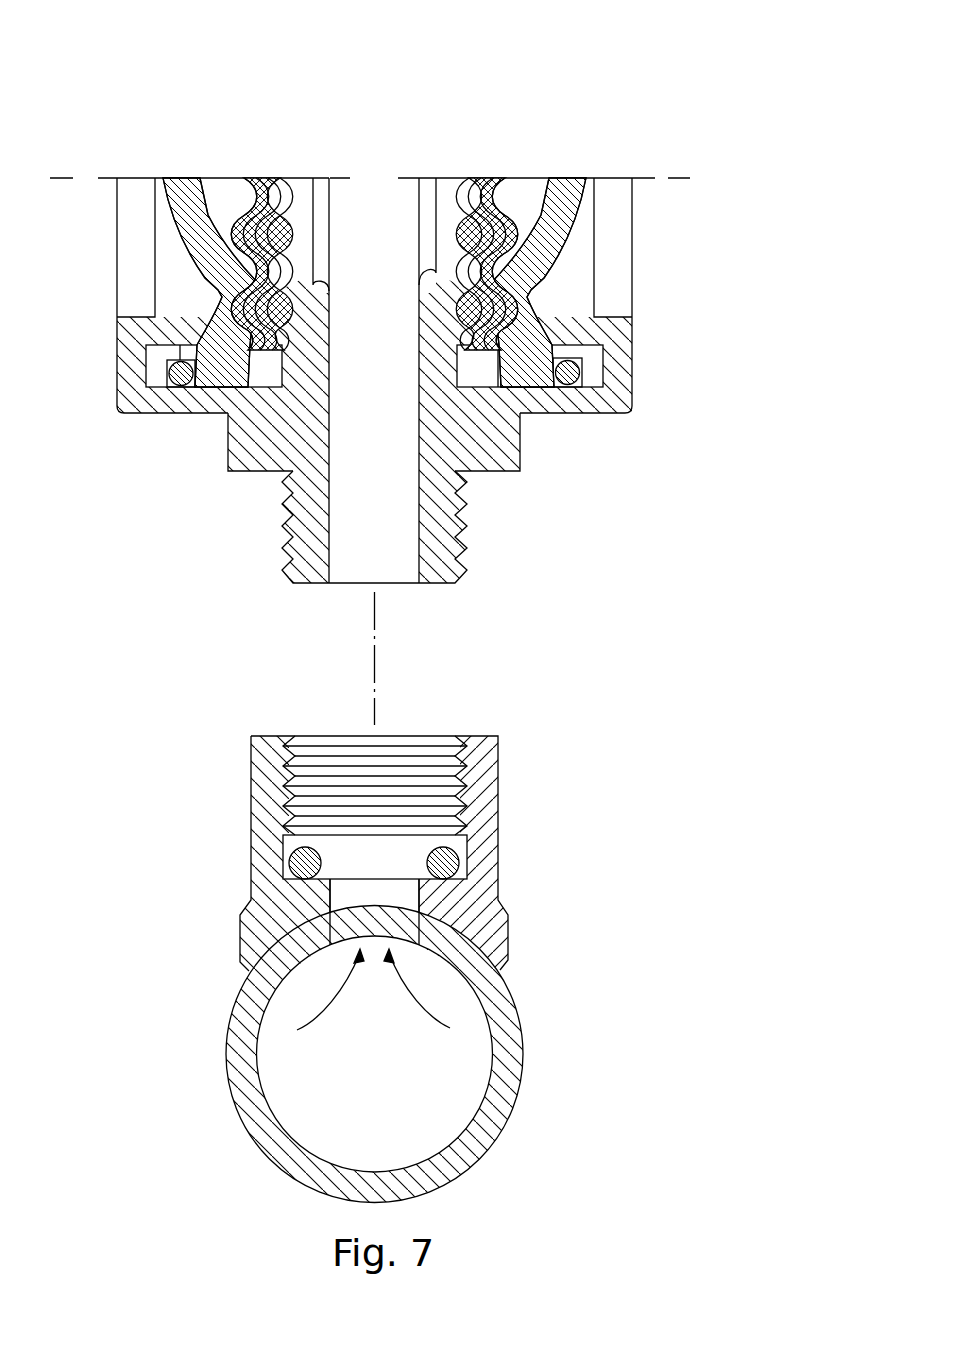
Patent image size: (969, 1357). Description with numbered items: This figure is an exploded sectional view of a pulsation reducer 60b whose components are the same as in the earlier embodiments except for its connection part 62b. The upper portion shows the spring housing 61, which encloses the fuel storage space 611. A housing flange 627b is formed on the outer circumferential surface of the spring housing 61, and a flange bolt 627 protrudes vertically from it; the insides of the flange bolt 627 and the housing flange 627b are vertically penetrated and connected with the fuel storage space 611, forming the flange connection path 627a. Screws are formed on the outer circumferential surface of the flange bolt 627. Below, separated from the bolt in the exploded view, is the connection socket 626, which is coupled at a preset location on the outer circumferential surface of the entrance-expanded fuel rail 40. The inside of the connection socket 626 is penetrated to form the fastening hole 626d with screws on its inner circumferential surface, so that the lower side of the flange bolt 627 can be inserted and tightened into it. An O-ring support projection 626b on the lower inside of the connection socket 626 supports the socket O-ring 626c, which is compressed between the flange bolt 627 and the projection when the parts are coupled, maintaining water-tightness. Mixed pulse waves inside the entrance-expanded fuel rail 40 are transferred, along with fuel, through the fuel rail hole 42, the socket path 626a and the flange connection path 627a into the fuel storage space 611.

The pulsation reducer 60b is at (504, 138).
The fuel storage space 611 is at (384, 194).
The spring housing 61 is at (617, 366).
The housing flange 627b is at (513, 438).
The flange connection path 627a is at (353, 512).
The flange bolt 627 is at (462, 507).
The fastening hole 626d is at (427, 763).
The socket O-ring 626c is at (288, 860).
The O-ring support projection 626b is at (316, 884).
The socket path 626a is at (403, 892).
The connection socket 626 is at (497, 930).
The connection part 62b is at (191, 914).
The fuel rail hole 42 is at (356, 912).
The entrance-expanded fuel rail 40 is at (503, 1093).